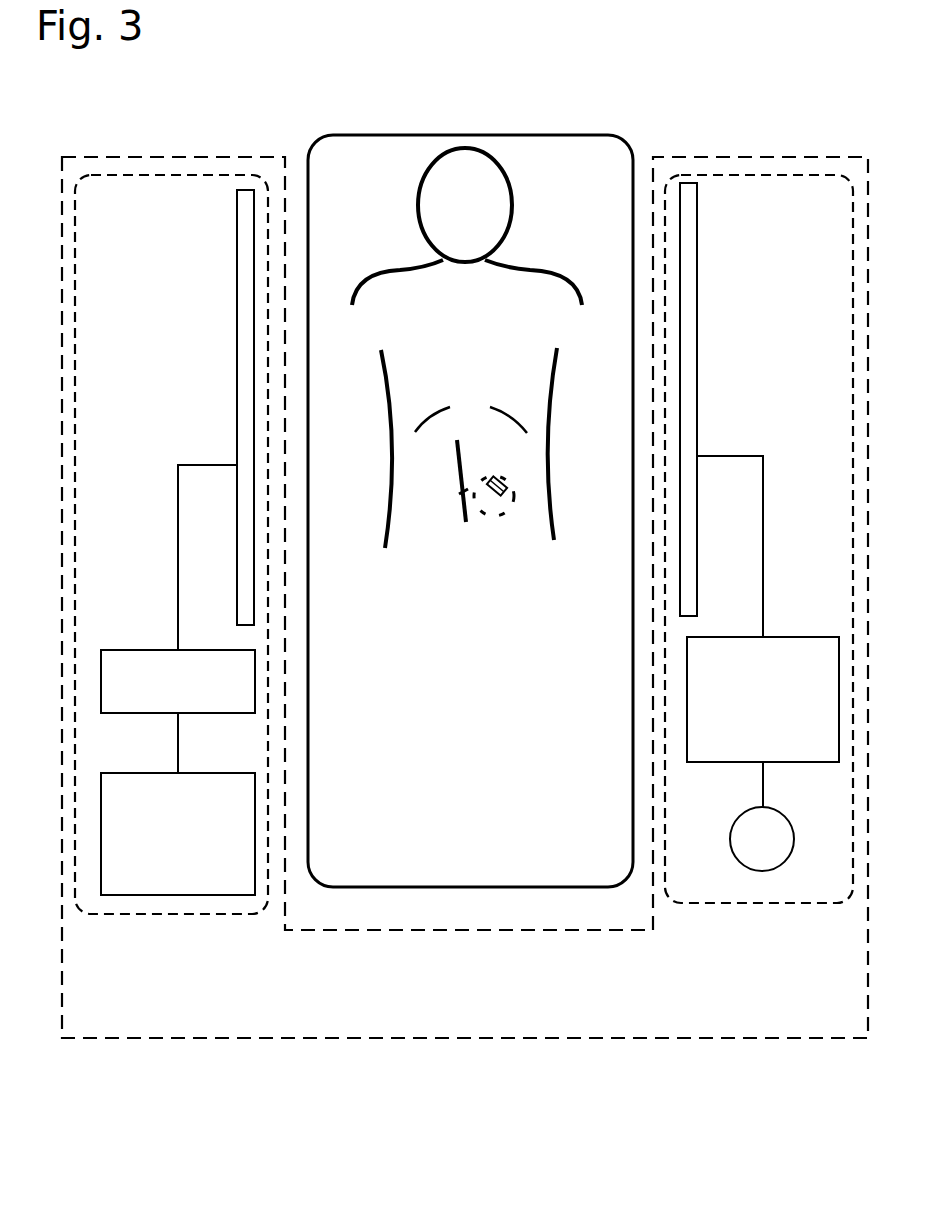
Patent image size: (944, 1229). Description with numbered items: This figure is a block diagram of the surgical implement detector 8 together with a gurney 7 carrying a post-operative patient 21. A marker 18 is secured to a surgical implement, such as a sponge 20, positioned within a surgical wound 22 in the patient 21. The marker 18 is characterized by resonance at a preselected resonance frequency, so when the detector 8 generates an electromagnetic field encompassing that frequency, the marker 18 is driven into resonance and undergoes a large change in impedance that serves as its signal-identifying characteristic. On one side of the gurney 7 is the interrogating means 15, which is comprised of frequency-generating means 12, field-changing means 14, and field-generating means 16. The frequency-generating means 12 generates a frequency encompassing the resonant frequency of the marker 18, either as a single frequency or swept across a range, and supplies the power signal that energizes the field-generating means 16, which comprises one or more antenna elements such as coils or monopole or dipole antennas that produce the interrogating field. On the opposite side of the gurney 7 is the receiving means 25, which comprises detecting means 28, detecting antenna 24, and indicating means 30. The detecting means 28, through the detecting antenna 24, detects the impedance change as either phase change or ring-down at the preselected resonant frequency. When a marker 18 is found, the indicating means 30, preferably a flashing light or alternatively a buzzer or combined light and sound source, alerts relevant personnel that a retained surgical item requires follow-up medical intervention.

The gurney 7 is at (373, 135).
The surgical implement detector 8 is at (358, 1039).
The frequency-generating means 12 is at (178, 834).
The field-changing means 14 is at (178, 711).
The interrogating means 15 is at (170, 914).
The field-generating means 16 is at (237, 449).
The marker 18 is at (505, 488).
The sponge 20 is at (492, 515).
The patient 21 is at (533, 263).
The surgical wound 22 is at (455, 465).
The detecting antenna 24 is at (697, 413).
The receiving means 25 is at (762, 910).
The detecting means 28 is at (763, 722).
The indicating means 30 is at (762, 839).